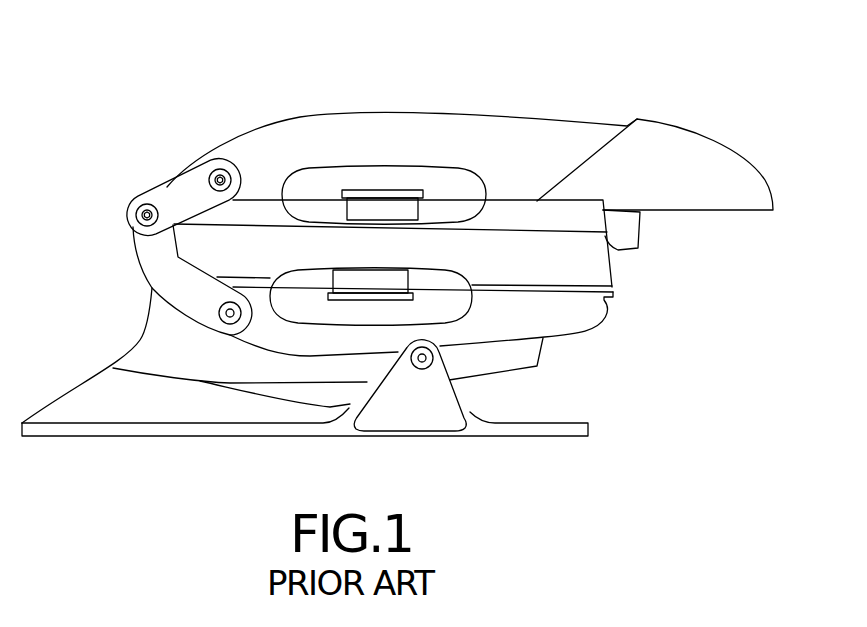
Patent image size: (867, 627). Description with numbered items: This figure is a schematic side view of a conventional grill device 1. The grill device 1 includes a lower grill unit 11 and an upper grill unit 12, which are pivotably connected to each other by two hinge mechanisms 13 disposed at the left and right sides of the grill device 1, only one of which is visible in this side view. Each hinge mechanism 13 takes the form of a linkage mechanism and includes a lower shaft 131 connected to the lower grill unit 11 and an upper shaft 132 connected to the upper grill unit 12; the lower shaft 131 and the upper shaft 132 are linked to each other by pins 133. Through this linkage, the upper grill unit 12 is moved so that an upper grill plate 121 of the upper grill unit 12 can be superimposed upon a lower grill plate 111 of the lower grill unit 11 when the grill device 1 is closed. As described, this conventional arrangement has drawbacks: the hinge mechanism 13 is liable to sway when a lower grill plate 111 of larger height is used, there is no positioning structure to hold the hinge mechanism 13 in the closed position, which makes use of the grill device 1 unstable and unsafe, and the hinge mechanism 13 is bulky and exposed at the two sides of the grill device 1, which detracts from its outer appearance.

The grill device 1 is at (512, 70).
The lower grill unit 11 is at (590, 344).
The lower grill plate 111 is at (593, 272).
The upper grill unit 12 is at (390, 98).
The upper grill plate 121 is at (580, 223).
The hinge mechanism 13 is at (128, 259).
The lower shaft 131 is at (217, 293).
The upper shaft 132 is at (168, 195).
The pin 133 is at (142, 213).